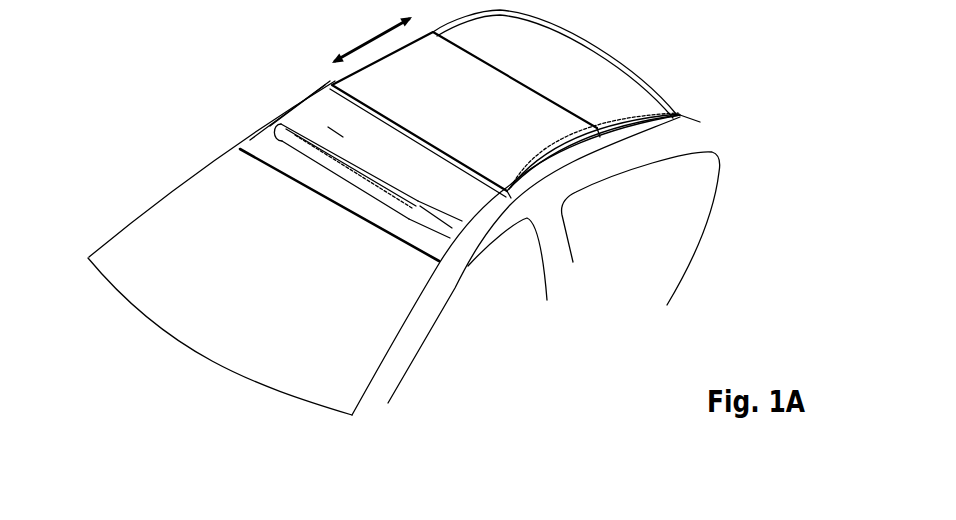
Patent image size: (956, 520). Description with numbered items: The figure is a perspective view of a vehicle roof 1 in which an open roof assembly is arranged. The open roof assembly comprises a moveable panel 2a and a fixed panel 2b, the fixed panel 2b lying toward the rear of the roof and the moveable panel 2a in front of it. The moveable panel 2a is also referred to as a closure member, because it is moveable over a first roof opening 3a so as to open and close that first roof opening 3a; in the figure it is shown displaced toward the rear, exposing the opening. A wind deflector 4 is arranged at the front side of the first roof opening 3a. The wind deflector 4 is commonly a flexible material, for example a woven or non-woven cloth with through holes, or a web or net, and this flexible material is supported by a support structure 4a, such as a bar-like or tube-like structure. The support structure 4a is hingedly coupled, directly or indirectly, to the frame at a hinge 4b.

The vehicle roof 1 is at (672, 147).
The moveable panel 2a is at (474, 107).
The fixed panel 2b is at (578, 77).
The first roof opening 3a is at (341, 136).
The wind deflector 4 is at (293, 152).
The support structure 4a is at (417, 203).
The hinge 4b is at (297, 104).